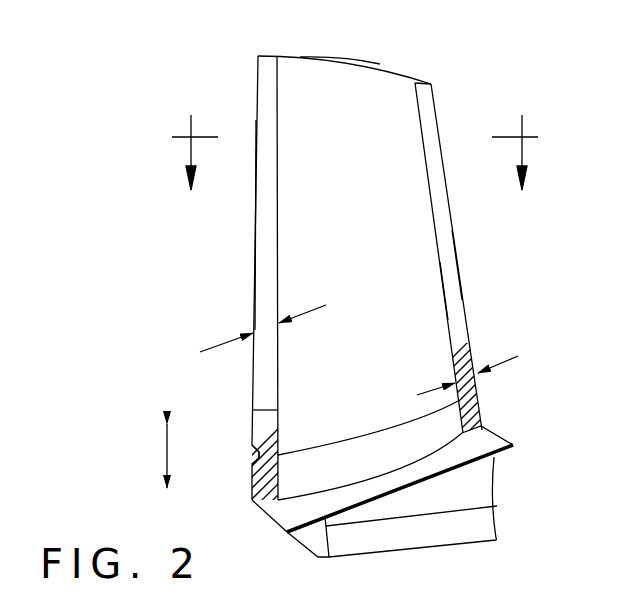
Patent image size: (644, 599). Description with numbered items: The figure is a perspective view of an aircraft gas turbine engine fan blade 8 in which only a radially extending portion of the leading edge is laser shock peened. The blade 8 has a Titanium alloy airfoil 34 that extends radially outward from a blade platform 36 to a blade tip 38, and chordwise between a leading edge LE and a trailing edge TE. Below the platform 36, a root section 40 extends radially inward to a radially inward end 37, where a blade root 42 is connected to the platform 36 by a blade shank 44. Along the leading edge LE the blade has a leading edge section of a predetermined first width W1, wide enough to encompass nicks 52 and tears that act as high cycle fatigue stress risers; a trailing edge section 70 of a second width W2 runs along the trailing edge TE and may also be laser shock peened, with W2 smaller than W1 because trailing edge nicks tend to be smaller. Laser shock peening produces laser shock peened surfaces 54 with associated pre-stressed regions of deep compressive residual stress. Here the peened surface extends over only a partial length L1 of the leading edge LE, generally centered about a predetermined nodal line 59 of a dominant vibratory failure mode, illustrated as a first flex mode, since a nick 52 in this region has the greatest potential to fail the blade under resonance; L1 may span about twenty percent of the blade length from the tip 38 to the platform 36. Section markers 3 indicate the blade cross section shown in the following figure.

The fan blade 8 is at (470, 76).
The airfoil 34 is at (351, 207).
The blade platform 36 is at (489, 440).
The radially inward end 37 is at (432, 550).
The blade tip 38 is at (350, 66).
The root section 40 is at (497, 506).
The blade root 42 is at (312, 548).
The blade shank 44 is at (497, 478).
The nick 52 is at (258, 455).
The laser shock peened surface 54 is at (265, 482).
The nodal line 59 is at (400, 425).
The trailing edge section 70 is at (449, 258).
The section line for FIG. 3 is at (355, 173).
The leading edge LE is at (256, 234).
The trailing edge TE is at (462, 284).
The first width W1 is at (213, 346).
The second width W2 is at (515, 357).
The laser shock peened surface length L1 is at (165, 446).